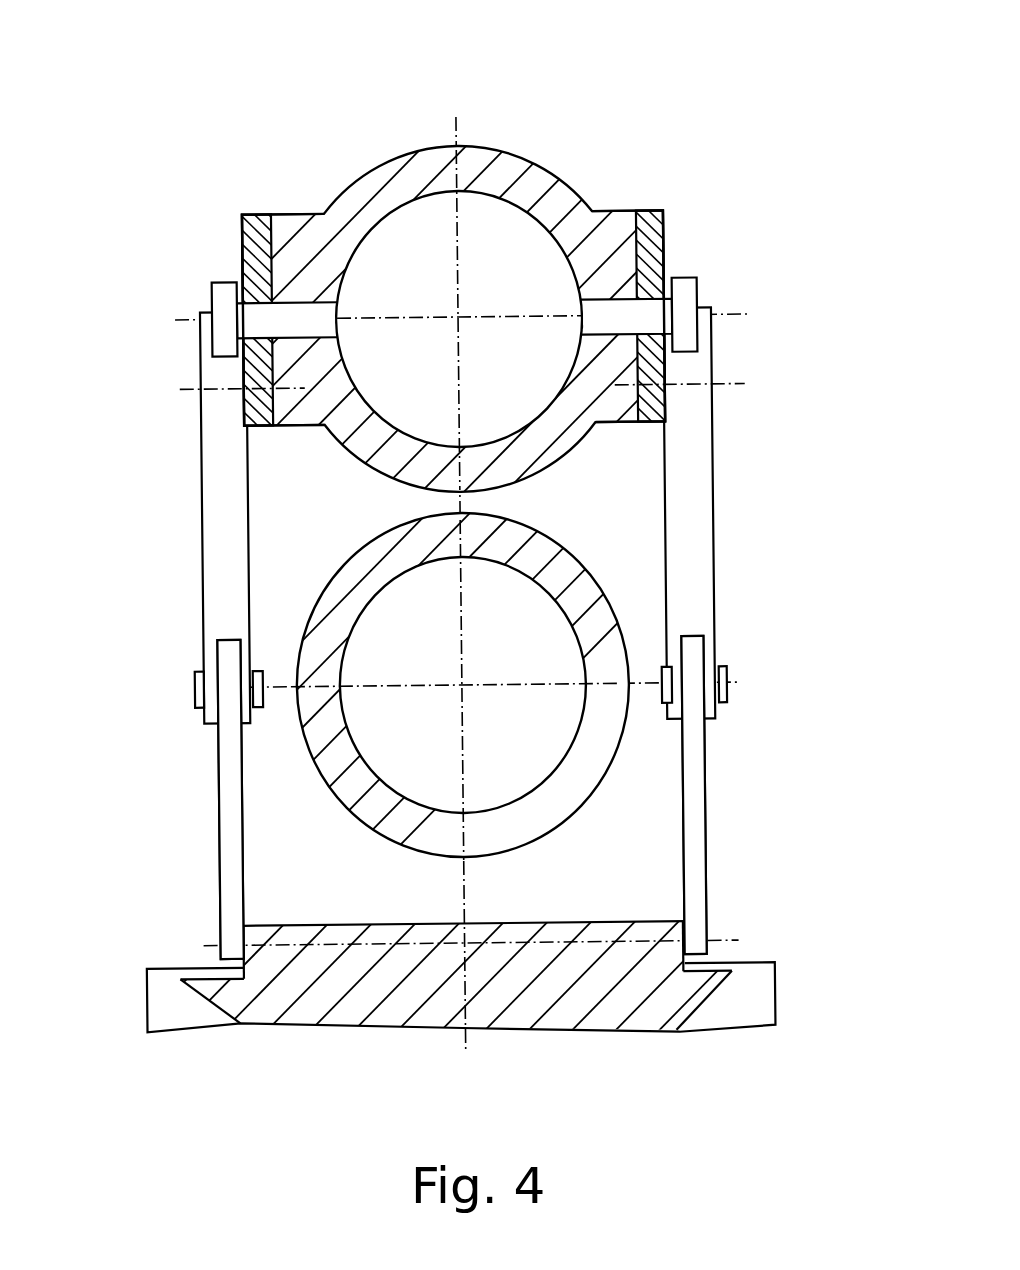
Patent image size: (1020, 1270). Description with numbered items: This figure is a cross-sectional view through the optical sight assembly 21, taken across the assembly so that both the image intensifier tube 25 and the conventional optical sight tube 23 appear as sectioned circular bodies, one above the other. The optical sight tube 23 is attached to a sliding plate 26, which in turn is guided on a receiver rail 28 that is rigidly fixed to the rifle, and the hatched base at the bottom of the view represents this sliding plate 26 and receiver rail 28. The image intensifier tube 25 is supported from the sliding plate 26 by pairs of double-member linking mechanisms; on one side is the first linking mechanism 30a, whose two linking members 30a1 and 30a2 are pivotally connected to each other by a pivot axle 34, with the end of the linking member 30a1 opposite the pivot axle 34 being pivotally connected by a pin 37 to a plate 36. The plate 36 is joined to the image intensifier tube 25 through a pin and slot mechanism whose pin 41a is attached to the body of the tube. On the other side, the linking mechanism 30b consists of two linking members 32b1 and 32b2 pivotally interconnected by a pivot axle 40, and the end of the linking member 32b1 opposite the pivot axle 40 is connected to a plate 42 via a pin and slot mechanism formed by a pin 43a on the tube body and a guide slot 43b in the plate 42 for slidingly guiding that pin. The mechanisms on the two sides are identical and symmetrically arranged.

The optical sight assembly 21 is at (111, 286).
The optical sight tube 23 is at (343, 835).
The image intensifier tube 25 is at (483, 121).
The sliding plate 26 is at (616, 1000).
The receiver rail 28 is at (746, 1010).
The first linking mechanism 30a is at (789, 617).
The linking member 30a1 is at (712, 508).
The linking member 30a2 is at (697, 849).
The linking mechanism 30b is at (144, 636).
The linking member 32b1 is at (222, 547).
The linking member 32b2 is at (226, 817).
The pivot axle 34 is at (727, 690).
The plate 36 is at (662, 228).
The pin 37 is at (205, 387).
The pivot axle 40 is at (182, 684).
The pin 41a is at (701, 276).
The plate 42 is at (256, 271).
The pin 43a is at (214, 298).
The guide slot 43b is at (247, 298).